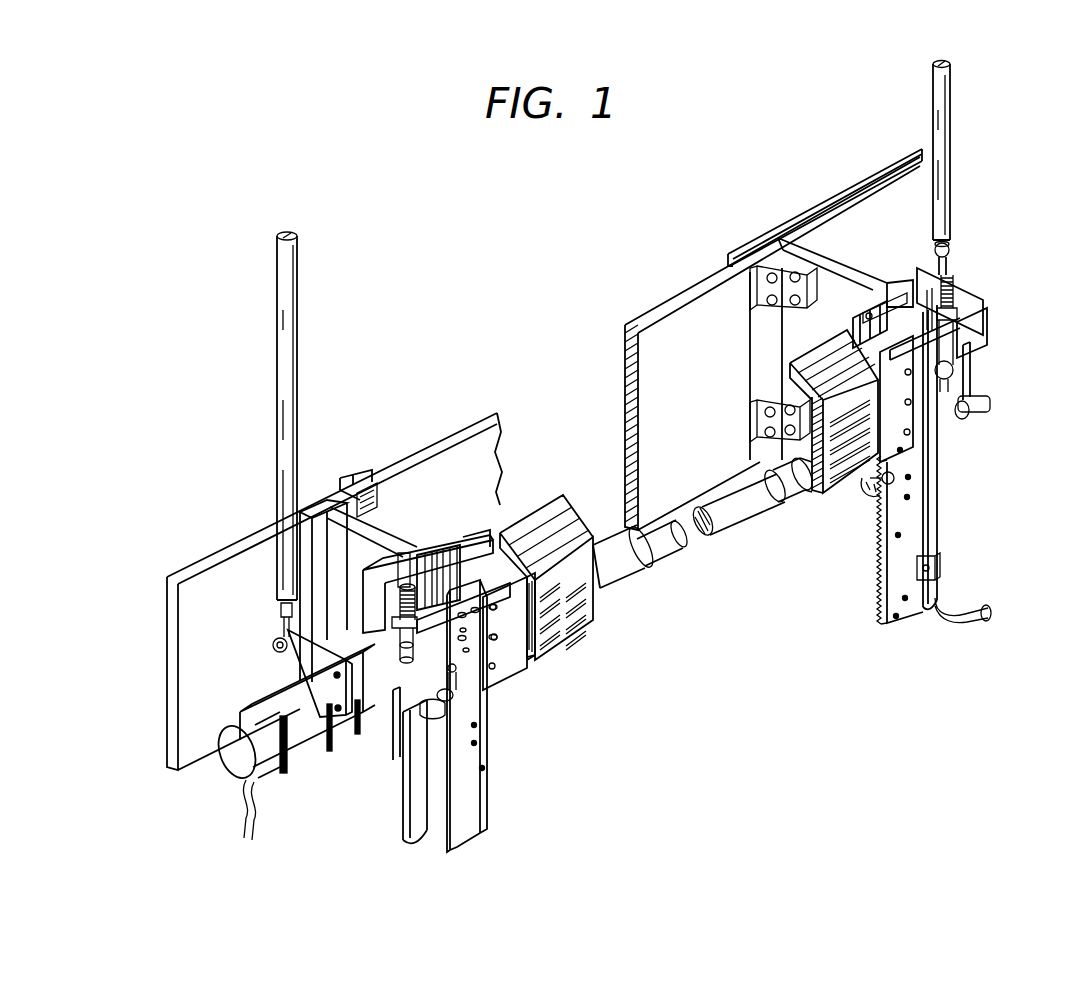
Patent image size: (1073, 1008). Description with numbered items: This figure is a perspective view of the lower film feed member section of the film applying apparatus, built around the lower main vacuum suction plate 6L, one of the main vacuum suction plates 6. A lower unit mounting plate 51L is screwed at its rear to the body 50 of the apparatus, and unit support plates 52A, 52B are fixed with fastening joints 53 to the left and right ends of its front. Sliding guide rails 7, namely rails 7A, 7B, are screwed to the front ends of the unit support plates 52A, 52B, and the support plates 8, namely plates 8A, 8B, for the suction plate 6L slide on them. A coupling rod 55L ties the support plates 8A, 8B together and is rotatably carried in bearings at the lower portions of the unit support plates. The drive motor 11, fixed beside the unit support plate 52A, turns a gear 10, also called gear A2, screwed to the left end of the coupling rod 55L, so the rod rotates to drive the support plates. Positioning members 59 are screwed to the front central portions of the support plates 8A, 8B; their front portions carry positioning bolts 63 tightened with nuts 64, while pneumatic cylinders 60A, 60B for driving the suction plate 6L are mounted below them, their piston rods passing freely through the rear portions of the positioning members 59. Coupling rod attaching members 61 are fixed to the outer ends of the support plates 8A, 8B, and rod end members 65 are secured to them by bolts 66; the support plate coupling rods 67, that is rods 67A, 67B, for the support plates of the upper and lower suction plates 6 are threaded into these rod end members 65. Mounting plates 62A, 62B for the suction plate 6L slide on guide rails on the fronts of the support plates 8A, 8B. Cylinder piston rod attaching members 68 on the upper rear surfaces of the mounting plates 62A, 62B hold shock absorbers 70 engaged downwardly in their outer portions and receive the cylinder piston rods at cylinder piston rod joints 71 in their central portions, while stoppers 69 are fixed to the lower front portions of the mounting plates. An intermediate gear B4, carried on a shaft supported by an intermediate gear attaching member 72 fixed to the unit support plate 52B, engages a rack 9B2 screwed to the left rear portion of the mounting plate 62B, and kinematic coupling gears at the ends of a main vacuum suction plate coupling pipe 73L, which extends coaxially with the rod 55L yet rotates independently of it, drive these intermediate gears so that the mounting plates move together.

The body of the applying apparatus 50 is at (216, 560).
The lower unit mounting plate 51L is at (492, 412).
The unit support plate 52A is at (350, 482).
The unit support plate 52B is at (835, 300).
The fastening joint 53 is at (378, 480).
The support plate coupling rod 55L is at (705, 548).
The positioning member 59 is at (457, 695).
The pneumatic cylinder 60A is at (420, 828).
The pneumatic cylinder 60B is at (932, 487).
The coupling rod attaching member 61 is at (302, 663).
The mounting plate 62A is at (470, 805).
The mounting plate 62B is at (917, 520).
The positioning bolt 63 is at (487, 678).
The nut 64 is at (462, 685).
The rod end member 65 is at (280, 612).
The bolt 66 is at (275, 645).
The support plate coupling rod 67 is at (668, 331).
The support plate coupling rod 67A is at (288, 270).
The support plate coupling rod 67B is at (945, 79).
The cylinder piston rod attaching member 68 is at (390, 620).
The stopper 69 is at (938, 567).
The shock absorber 70 is at (403, 553).
The cylinder piston rod joint 71 is at (407, 700).
The intermediate gear attaching member 72 is at (905, 477).
The main vacuum suction plate coupling pipe 73L is at (613, 587).
The main vacuum suction plate 6 is at (689, 507).
The lower main vacuum suction plate 6L is at (577, 628).
The sliding guide rail 7 is at (699, 399).
The sliding guide rail 7A is at (425, 552).
The sliding guide rail 7B is at (905, 260).
The support plate 8 is at (612, 497).
The support plate 8A is at (475, 540).
The support plate 8B is at (855, 318).
The rack 9B2 is at (885, 622).
The gear 10 is at (301, 732).
The gear A2 is at (382, 712).
The drive motor 11 is at (297, 758).
The intermediate gear B4 is at (888, 482).